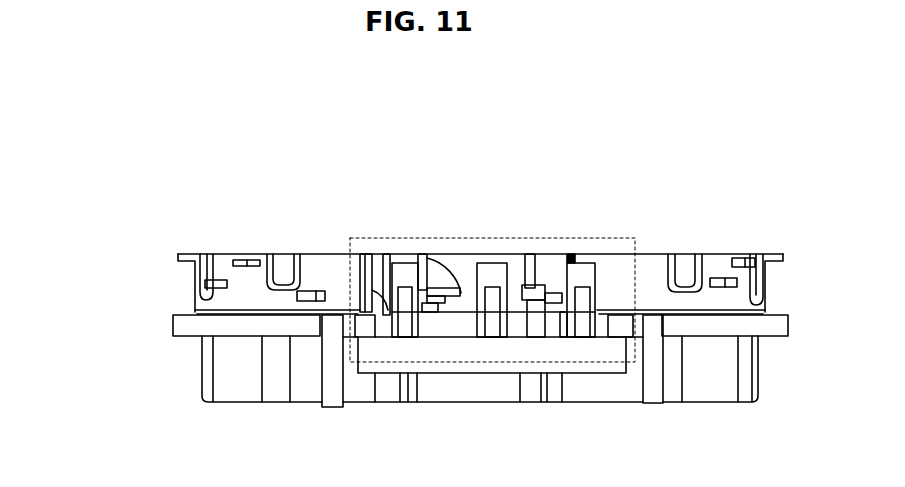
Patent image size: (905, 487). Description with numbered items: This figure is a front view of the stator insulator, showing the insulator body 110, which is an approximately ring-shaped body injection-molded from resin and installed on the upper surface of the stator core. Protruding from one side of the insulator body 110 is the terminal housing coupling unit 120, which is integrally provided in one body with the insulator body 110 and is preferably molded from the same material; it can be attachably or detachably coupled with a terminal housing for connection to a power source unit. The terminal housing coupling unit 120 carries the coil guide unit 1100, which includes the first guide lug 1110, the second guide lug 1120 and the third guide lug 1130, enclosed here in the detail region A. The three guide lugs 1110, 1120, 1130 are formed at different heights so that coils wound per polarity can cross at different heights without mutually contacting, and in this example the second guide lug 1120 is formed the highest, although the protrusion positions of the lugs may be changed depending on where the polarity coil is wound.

The insulator body 110 is at (166, 204).
The terminal housing coupling unit 120 is at (643, 318).
The coil guide unit 1100 is at (585, 157).
The first guide lug 1110 is at (423, 255).
The second guide lug 1120 is at (527, 286).
The third guide lug 1130 is at (541, 287).
The detail region A is at (350, 240).